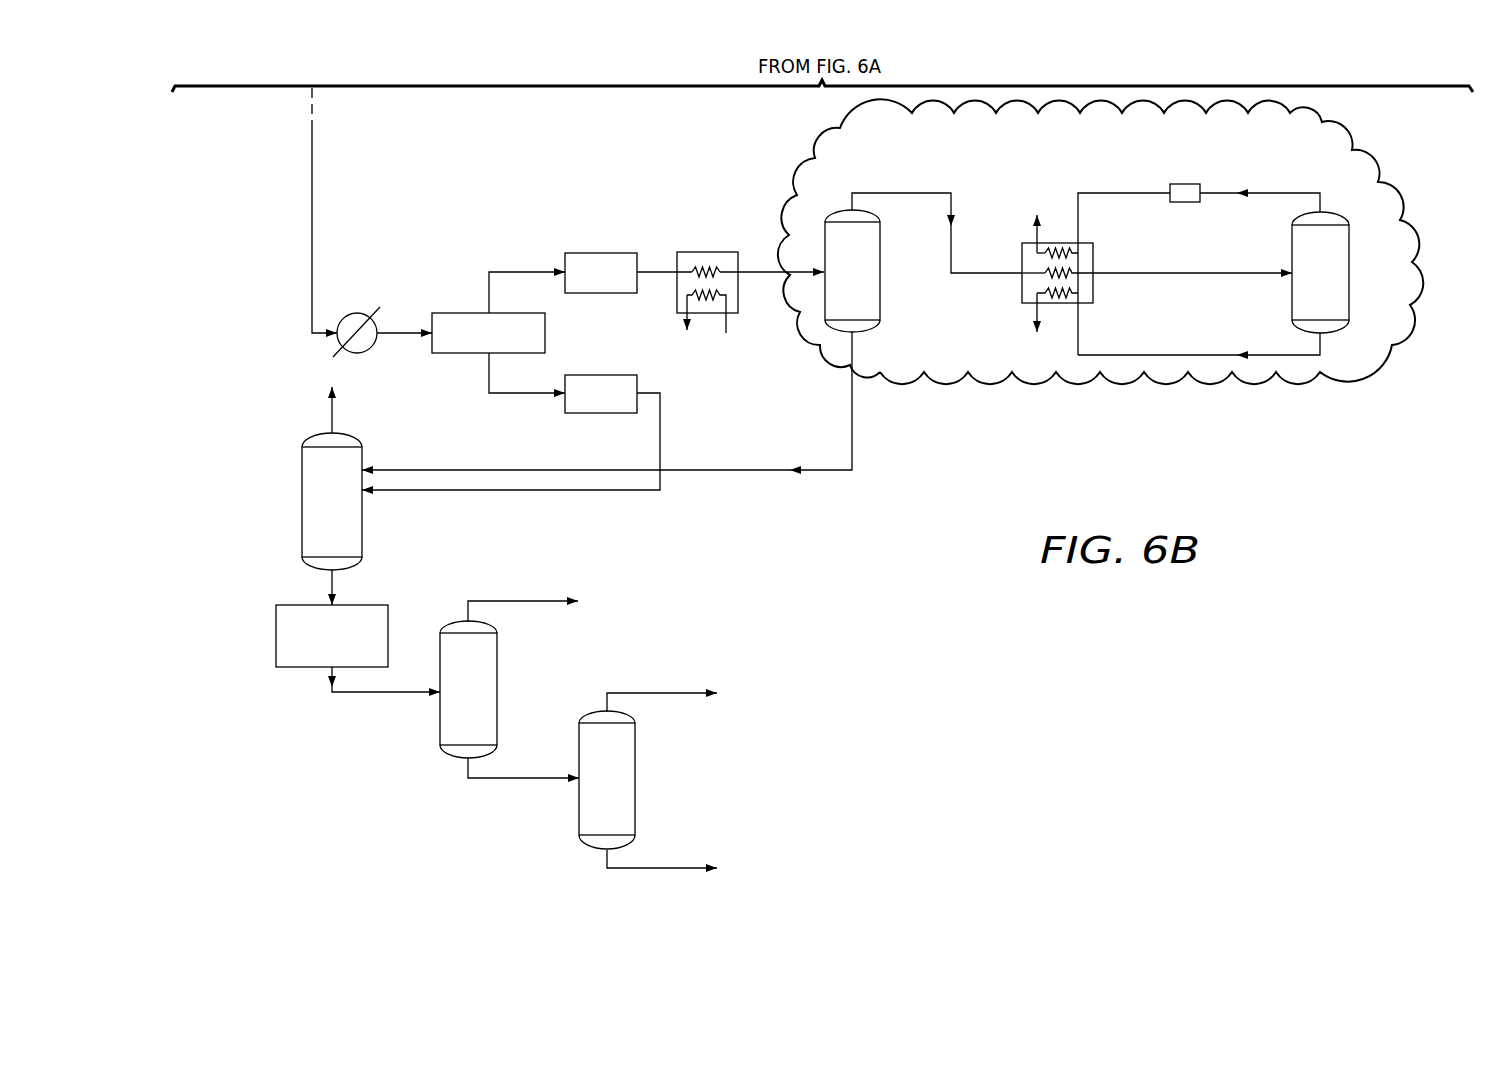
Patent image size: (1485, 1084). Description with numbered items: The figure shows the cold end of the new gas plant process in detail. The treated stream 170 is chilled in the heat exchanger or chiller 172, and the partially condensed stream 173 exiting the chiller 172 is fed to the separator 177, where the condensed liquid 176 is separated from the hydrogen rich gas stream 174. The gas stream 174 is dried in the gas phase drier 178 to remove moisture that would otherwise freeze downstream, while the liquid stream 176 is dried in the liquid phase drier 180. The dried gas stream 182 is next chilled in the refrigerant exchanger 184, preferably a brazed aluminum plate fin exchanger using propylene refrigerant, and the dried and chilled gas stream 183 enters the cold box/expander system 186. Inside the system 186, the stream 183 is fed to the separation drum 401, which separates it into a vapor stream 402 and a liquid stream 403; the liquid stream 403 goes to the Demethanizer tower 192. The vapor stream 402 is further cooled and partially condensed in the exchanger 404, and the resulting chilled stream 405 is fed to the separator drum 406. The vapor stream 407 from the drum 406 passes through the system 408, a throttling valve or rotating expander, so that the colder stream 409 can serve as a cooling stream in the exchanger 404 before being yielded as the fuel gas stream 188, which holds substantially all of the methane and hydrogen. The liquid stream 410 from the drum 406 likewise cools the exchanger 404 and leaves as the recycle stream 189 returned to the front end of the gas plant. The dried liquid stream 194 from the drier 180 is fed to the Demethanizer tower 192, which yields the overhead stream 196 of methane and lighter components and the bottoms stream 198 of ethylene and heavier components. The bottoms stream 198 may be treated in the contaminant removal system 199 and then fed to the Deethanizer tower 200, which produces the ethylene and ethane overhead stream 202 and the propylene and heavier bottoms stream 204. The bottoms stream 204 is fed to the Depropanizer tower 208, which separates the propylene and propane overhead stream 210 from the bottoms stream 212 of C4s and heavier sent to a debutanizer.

The treated stream 170 is at (312, 247).
The heat exchanger (chiller) 172 is at (365, 314).
The stream exiting chiller 173 is at (414, 328).
The hydrogen rich gas stream 174 is at (503, 271).
The condensed liquid stream 176 is at (489, 377).
The separator 177 is at (546, 334).
The gas phase drier 178 is at (600, 253).
The liquid phase drier 180 is at (598, 418).
The dried gas stream 182 is at (661, 272).
The dried and chilled gas stream 183 is at (765, 272).
The heat exchanger (chiller) 184 is at (705, 252).
The cold box/expander system 186 is at (1375, 180).
The fuel gas stream 188 is at (1031, 238).
The recycle stream 189 is at (1031, 318).
The Demethanizer tower 192 is at (362, 527).
The dried liquid stream 194 is at (660, 446).
The Demethanizer overhead stream 196 is at (332, 420).
The Demethanizer bottoms stream 198 is at (332, 582).
The contaminant removal system 199 is at (276, 638).
The Deethanizer tower 200 is at (440, 721).
The Deethanizer overhead stream 202 is at (520, 600).
The Deethanizer bottoms stream 204 is at (522, 780).
The Depropanizer tower 208 is at (635, 782).
The Depropanizer overhead stream 210 is at (661, 692).
The Depropanizer bottoms stream 212 is at (668, 867).
The separation drum 401 is at (880, 276).
The vapor stream 402 is at (900, 192).
The liquid stream 403 is at (856, 340).
The exchanger 404 is at (1022, 264).
The chilled stream 405 is at (1152, 272).
The separator drum 406 is at (1290, 253).
The vapor stream (fuel gas) 407 is at (1260, 192).
The throttling valve or expander system 408 is at (1185, 184).
The expanded stream 409 is at (1122, 192).
The liquid stream 410 is at (1195, 354).